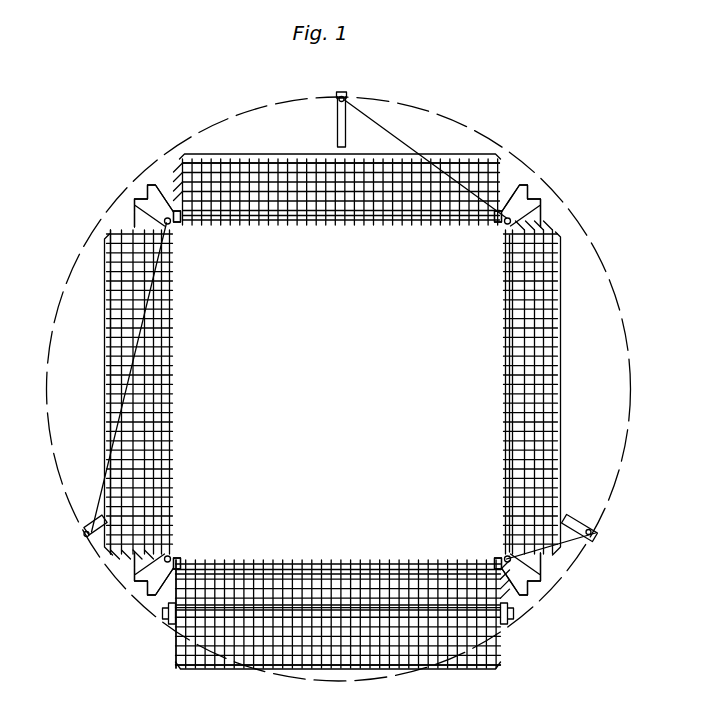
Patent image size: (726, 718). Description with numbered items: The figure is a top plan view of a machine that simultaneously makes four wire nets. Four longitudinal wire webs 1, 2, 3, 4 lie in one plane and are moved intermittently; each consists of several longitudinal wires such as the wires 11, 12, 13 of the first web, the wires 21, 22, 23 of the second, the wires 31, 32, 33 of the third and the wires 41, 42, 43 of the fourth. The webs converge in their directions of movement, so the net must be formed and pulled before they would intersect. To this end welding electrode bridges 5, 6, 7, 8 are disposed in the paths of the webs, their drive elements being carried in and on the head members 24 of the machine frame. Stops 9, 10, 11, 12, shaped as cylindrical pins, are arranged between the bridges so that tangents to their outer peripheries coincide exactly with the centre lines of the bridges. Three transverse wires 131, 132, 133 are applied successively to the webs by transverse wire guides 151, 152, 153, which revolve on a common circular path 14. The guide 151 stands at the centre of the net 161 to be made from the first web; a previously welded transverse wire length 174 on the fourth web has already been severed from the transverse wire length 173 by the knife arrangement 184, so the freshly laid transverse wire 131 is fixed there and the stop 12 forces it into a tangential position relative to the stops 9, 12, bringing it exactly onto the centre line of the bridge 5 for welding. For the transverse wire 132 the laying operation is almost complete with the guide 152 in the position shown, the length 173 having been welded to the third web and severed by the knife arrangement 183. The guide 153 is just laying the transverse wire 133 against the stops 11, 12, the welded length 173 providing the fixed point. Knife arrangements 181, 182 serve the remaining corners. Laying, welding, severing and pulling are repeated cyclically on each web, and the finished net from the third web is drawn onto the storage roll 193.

The longitudinal wire web 1 is at (324, 149).
The stop 11 is at (512, 557).
The stop 12 is at (512, 216).
The longitudinal wire 13 is at (211, 168).
The longitudinal wire web 2 is at (112, 376).
The longitudinal wire 21 is at (125, 233).
The longitudinal wire 22 is at (125, 244).
The longitudinal wire 23 is at (126, 254).
The longitudinal wire web 3 is at (346, 687).
The longitudinal wire 31 is at (186, 662).
The longitudinal wire 32 is at (196, 670).
The longitudinal wire 33 is at (206, 670).
The longitudinal wire web 4 is at (569, 384).
The longitudinal wire 41 is at (560, 556).
The longitudinal wire 42 is at (562, 536).
The longitudinal wire 43 is at (558, 526).
The welding electrode bridge 5 is at (176, 213).
The welding electrode bridge 6 is at (140, 572).
The welding electrode bridge 7 is at (522, 572).
The welding electrode bridge 8 is at (525, 208).
The stop 9 is at (184, 222).
The stop 10 is at (180, 556).
The transverse wire 131 is at (413, 141).
The transverse wire 132 is at (108, 487).
The transverse wire 133 is at (568, 542).
The circular path 14 is at (630, 447).
The transverse wire guide 151 is at (354, 97).
The transverse wire guide 152 is at (93, 538).
The transverse wire guide 153 is at (607, 530).
The net 161 is at (349, 222).
The transverse wire length 173 is at (247, 562).
The transverse wire length 174 is at (514, 262).
The knife arrangement 181 is at (532, 180).
The knife arrangement 182 is at (143, 212).
The knife arrangement 183 is at (168, 603).
The knife arrangement 184 is at (553, 572).
The storage roll 193 is at (518, 615).
The head member 24 is at (160, 198).